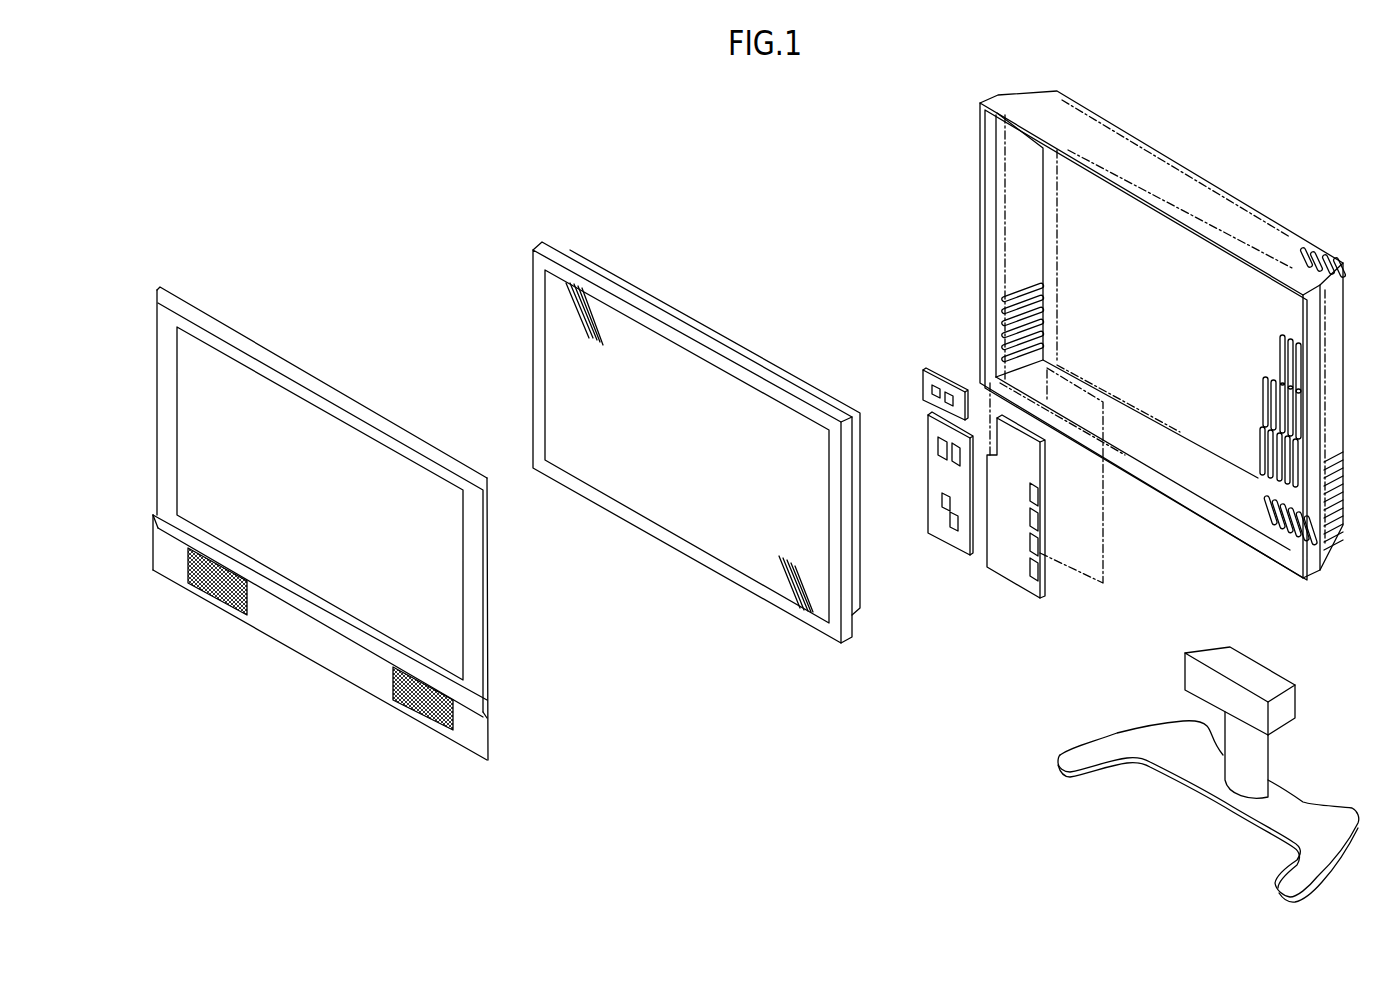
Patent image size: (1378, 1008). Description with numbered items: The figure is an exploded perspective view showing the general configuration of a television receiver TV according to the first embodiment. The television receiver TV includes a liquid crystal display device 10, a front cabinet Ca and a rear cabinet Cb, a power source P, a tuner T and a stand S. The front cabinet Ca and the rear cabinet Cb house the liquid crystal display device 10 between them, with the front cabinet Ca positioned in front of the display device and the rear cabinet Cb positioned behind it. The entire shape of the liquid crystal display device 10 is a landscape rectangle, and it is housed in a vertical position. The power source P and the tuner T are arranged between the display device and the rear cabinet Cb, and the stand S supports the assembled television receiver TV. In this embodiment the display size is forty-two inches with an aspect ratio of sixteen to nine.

The television receiver TV is at (719, 184).
The front cabinet Ca is at (303, 370).
The liquid crystal display device 10 is at (640, 288).
The rear cabinet Cb is at (1157, 172).
The tuner T is at (942, 542).
The power source P is at (1005, 578).
The stand S is at (1122, 762).